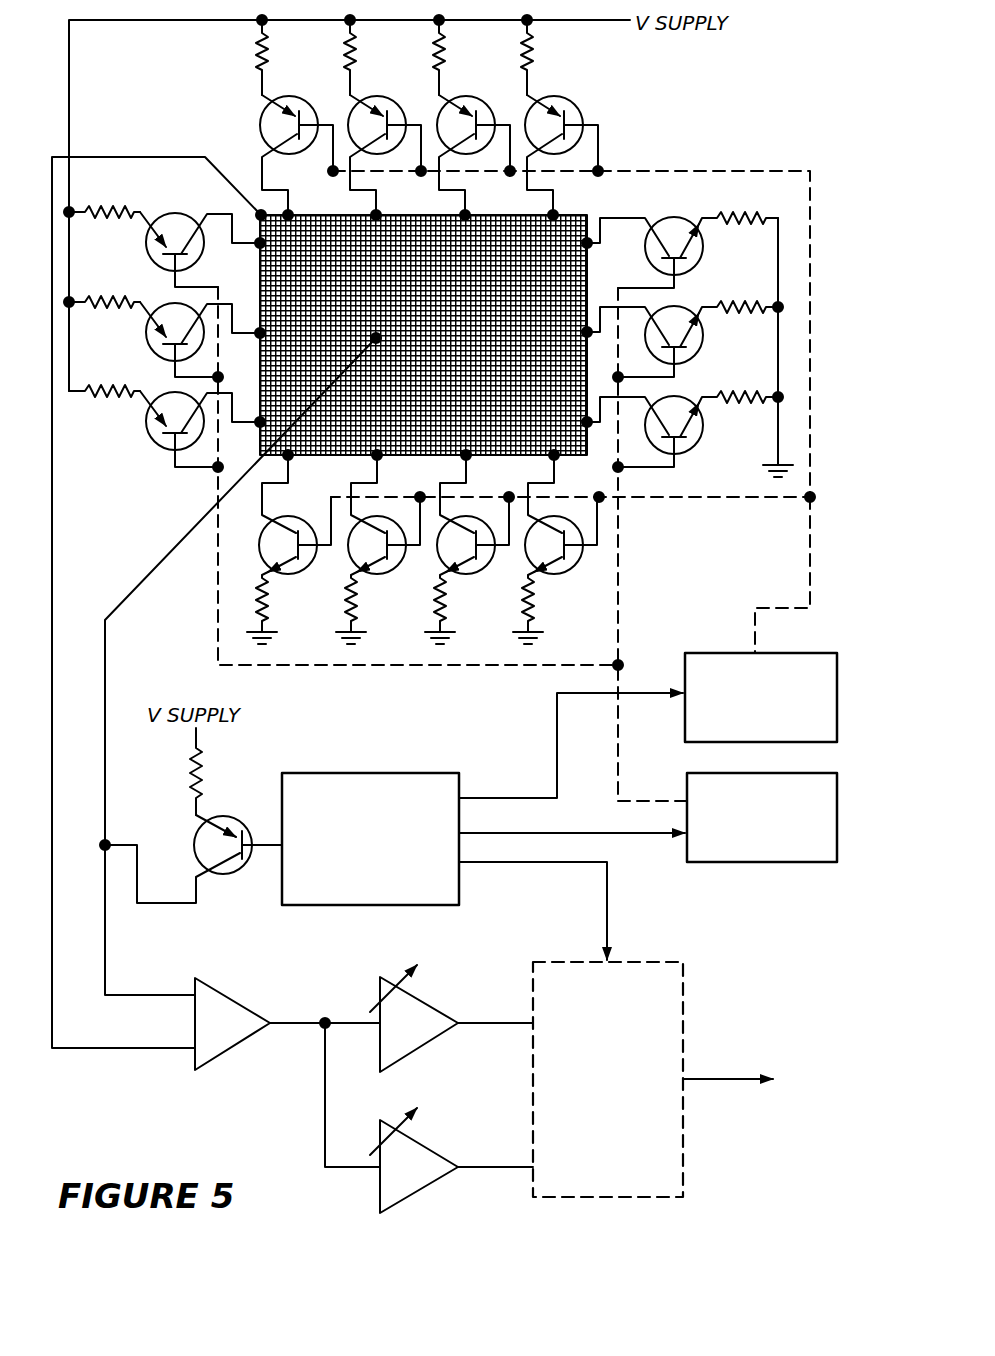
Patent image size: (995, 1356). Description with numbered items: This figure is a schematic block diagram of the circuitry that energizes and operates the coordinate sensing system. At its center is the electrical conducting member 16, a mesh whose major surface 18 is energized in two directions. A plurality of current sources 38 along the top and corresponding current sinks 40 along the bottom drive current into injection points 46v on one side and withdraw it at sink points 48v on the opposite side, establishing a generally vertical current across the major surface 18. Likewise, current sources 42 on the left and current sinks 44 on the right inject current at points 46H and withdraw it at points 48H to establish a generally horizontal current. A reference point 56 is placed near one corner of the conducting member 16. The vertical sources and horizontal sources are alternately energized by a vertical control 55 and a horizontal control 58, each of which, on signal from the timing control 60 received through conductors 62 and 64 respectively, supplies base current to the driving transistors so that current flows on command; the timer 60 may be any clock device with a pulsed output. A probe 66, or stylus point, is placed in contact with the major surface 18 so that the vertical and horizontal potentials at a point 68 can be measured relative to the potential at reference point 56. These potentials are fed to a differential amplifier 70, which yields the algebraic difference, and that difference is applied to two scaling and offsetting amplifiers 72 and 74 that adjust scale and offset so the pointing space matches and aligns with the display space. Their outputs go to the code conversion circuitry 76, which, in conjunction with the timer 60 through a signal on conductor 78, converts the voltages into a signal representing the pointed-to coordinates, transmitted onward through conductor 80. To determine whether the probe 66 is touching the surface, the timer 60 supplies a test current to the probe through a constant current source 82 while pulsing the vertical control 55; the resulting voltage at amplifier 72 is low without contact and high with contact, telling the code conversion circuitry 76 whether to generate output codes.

The conducting member 16 is at (612, 207).
The major surface 18 is at (435, 329).
The current sources 38 is at (346, 97).
The current sinks 40 is at (338, 577).
The current sources 42 is at (157, 302).
The current sinks 44 is at (697, 306).
The injection point 46v is at (290, 214).
The injection points 46H is at (257, 247).
The sink point 48v is at (290, 457).
The sink points 48H is at (590, 247).
The vertical control 55 is at (718, 652).
The reference point 56 is at (255, 212).
The horizontal control 58 is at (770, 864).
The timing control 60 is at (398, 773).
The conductor 62 is at (630, 692).
The conductor 64 is at (610, 830).
The probe 66 is at (380, 343).
The point 68 is at (372, 336).
The differential amplifier 70 is at (217, 1002).
The scaling and offsetting amplifier 72 is at (420, 1040).
The scaling and offsetting amplifier 74 is at (420, 1183).
The code conversion circuitry 76 is at (686, 1028).
The conductor 78 is at (607, 901).
The conductor 80 is at (715, 1077).
The constant current source 82 is at (234, 810).